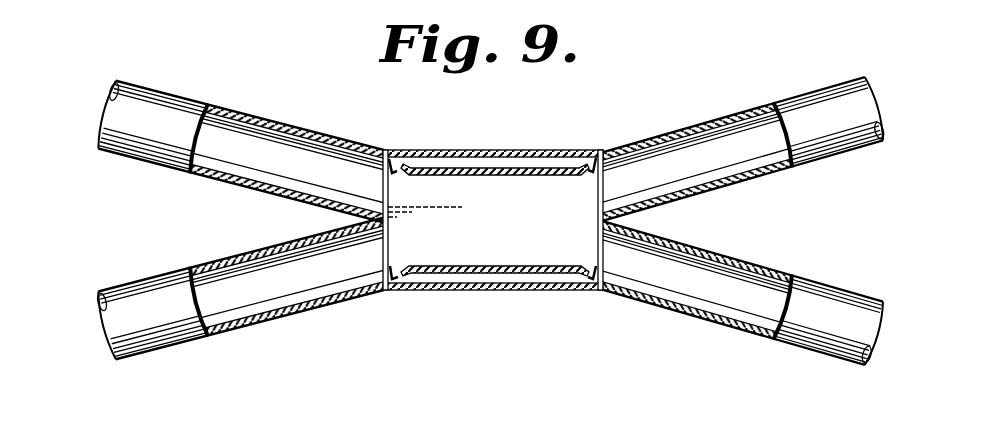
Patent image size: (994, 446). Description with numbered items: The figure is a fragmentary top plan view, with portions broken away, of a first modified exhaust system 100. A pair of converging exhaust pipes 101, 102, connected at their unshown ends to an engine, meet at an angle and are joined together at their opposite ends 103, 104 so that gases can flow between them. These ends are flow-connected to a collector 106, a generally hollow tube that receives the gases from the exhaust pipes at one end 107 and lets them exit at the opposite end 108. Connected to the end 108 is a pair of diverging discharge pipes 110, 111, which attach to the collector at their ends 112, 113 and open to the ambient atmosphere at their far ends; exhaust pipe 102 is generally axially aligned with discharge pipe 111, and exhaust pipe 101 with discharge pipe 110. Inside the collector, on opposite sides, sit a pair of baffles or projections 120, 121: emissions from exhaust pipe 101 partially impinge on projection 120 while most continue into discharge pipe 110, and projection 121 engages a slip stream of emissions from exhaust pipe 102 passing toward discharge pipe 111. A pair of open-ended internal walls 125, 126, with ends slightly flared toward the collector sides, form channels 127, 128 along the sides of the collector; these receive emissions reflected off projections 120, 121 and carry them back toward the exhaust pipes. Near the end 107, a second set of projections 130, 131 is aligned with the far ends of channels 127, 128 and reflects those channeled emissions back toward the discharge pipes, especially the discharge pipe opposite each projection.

The exhaust system 100 is at (490, 221).
The exhaust pipe 101 is at (263, 324).
The exhaust pipe 102 is at (252, 115).
The exhaust pipe end 103 is at (385, 292).
The exhaust pipe end 104 is at (388, 139).
The collector 106 is at (500, 151).
The collector end 107 is at (387, 195).
The collector end 108 is at (602, 192).
The discharge pipe 110 is at (713, 119).
The discharge pipe 111 is at (707, 317).
The discharge pipe end 112 is at (604, 156).
The discharge pipe end 113 is at (598, 292).
The projection 120 is at (593, 158).
The projection 121 is at (594, 286).
The internal wall 125 is at (534, 177).
The internal wall 126 is at (447, 243).
The channel 127 is at (463, 160).
The channel 128 is at (505, 275).
The projection 130 is at (382, 175).
The projection 131 is at (384, 268).